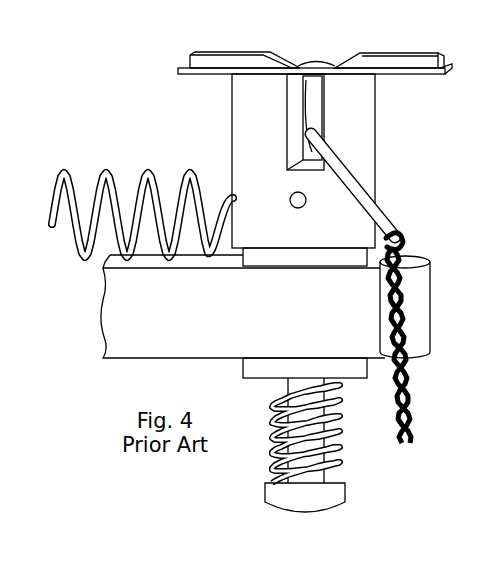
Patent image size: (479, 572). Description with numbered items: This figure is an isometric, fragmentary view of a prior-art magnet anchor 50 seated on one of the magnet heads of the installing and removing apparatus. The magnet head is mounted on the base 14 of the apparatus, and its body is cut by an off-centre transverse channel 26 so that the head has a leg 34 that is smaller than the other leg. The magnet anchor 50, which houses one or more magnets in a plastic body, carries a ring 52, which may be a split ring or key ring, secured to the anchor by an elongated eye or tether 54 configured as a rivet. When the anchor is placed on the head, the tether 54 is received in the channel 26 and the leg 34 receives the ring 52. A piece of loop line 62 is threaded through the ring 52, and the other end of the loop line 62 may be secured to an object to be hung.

The magnet anchor 50 is at (216, 47).
The leg 34 is at (362, 111).
The tether 54 is at (305, 148).
The ring 52 is at (376, 192).
The transverse channel 26 is at (304, 168).
The base 14 is at (262, 318).
The loop line 62 is at (405, 305).